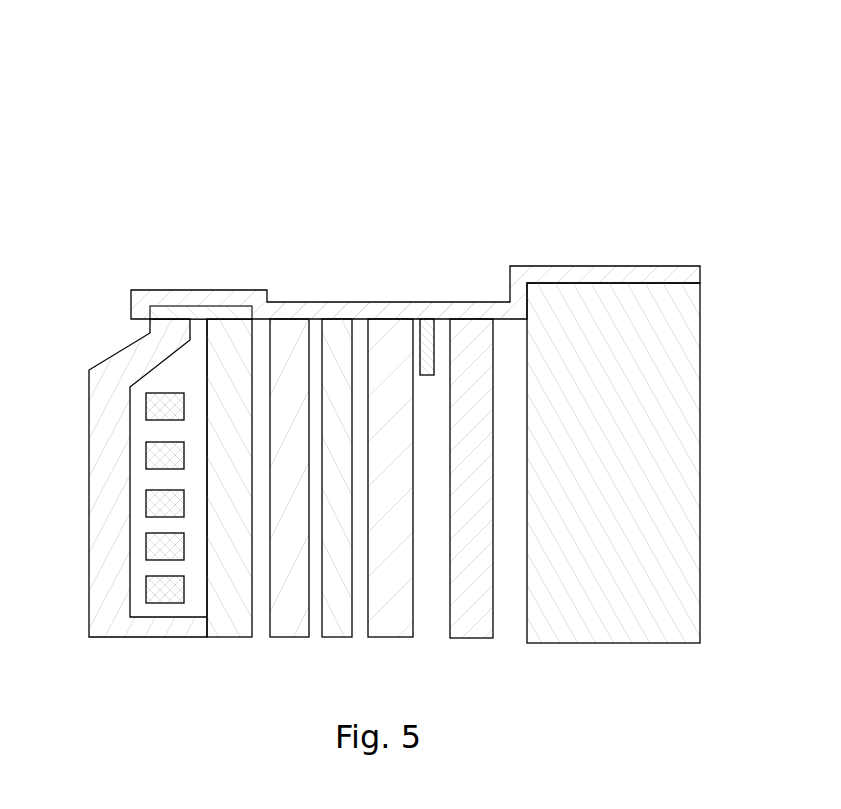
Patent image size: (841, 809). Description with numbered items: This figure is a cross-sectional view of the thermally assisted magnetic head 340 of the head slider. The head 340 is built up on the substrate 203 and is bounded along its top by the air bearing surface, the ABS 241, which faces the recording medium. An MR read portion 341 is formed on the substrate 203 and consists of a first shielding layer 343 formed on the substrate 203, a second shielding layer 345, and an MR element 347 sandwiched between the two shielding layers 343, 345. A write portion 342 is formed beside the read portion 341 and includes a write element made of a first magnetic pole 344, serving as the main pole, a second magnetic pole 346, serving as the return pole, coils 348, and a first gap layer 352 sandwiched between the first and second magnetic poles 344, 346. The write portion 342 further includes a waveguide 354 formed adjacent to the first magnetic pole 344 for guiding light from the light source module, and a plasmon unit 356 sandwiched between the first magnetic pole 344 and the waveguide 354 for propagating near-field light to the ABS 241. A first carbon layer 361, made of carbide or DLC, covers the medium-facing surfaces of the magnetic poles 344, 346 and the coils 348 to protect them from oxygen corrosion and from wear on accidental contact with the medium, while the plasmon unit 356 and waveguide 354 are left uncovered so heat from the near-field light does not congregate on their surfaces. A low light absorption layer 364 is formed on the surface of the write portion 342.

The thermally assisted magnetic head 340 is at (87, 57).
The write portion 342 is at (97, 213).
The MR read portion 341 is at (512, 210).
The second magnetic pole 346 is at (161, 322).
The coils 348 is at (177, 396).
The first gap layer 352 is at (197, 333).
The first magnetic pole 344 is at (228, 328).
The plasmon unit 356 is at (290, 330).
The waveguide 354 is at (333, 330).
The low light absorption layer 364 is at (362, 312).
The second shielding layer 345 is at (389, 330).
The MR element 347 is at (427, 330).
The first shielding layer 343 is at (471, 332).
The substrate 203 is at (608, 307).
The ABS 241 is at (696, 262).
The first carbon layer 361 is at (155, 315).